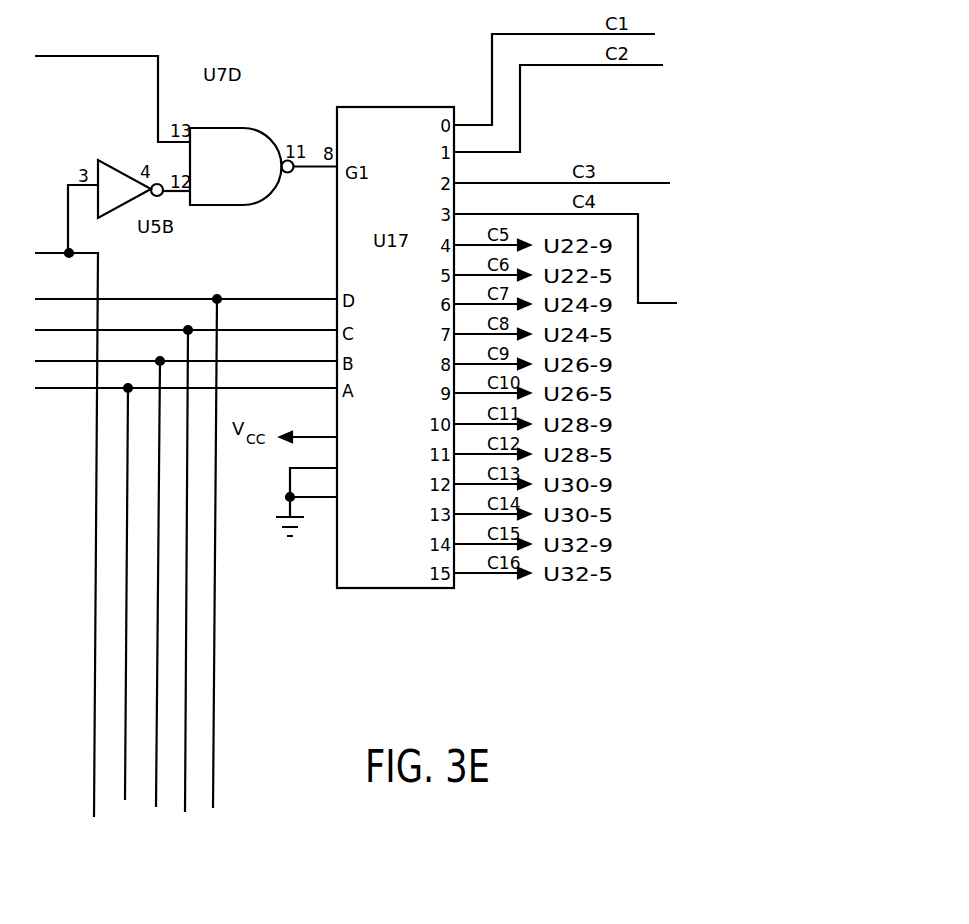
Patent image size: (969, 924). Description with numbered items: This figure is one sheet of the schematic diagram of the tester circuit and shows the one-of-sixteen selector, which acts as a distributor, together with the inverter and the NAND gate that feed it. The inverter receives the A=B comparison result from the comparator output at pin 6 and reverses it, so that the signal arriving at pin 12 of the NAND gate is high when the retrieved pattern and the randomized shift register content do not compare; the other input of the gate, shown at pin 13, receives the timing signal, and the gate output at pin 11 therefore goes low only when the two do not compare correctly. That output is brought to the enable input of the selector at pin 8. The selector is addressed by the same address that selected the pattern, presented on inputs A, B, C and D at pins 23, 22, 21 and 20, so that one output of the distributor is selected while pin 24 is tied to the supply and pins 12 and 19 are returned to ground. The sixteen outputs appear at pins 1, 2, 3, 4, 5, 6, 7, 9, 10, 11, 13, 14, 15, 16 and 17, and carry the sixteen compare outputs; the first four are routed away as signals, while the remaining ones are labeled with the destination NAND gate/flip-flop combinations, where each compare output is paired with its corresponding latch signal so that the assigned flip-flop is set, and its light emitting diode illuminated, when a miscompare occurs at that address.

The U17 pin 1 (output 0, signal C1) 1 is at (554, 79).
The U17 pin 2 (output 1, signal C2) 2 is at (558, 108).
The U17 pin 3 (output 2, signal C3) 3 is at (562, 173).
The U17 pin 4 (output 3, signal C4) 4 is at (565, 248).
The U17 pin 5 (output 4, signal C5 to U22-9) 5 is at (492, 237).
The pin 6 is at (492, 267).
The U17 pin 7 (output 6, signal C7 to U24-9) 7 is at (492, 296).
The U17 pin 8 (output 7, signal C8 to U24-5) 8 is at (492, 326).
The U17 pin 9 (output 8, signal C9 to U26-9) 9 is at (492, 356).
The U17 pin 10 (output 9, signal C10 to U26-5) 10 is at (492, 385).
The pin 11 is at (492, 416).
The pin 12 is at (313, 482).
The U17 pin 13 (output 11, signal C12 to U28-5) 13 is at (492, 446).
The U17 pin 14 (output 12, signal C13 to U30-9) 14 is at (492, 476).
The U17 pin 15 (output 13, signal C14 to U30-5) 15 is at (492, 506).
The U17 pin 16 (output 14, signal C15 to U32-9) 16 is at (492, 536).
The U17 pin 17 (output 15, signal C16 to U32-5) 17 is at (492, 565).
The U17 pin 19 (ground) 19 is at (311, 489).
The U17 pin 20 (input D) 20 is at (186, 544).
The U17 pin 21 (input C) 21 is at (186, 561).
The U17 pin 22 (input B) 22 is at (186, 574).
The U17 pin 23 (input A) 23 is at (186, 584).
The U17 pin 24 (Vcc) 24 is at (308, 429).